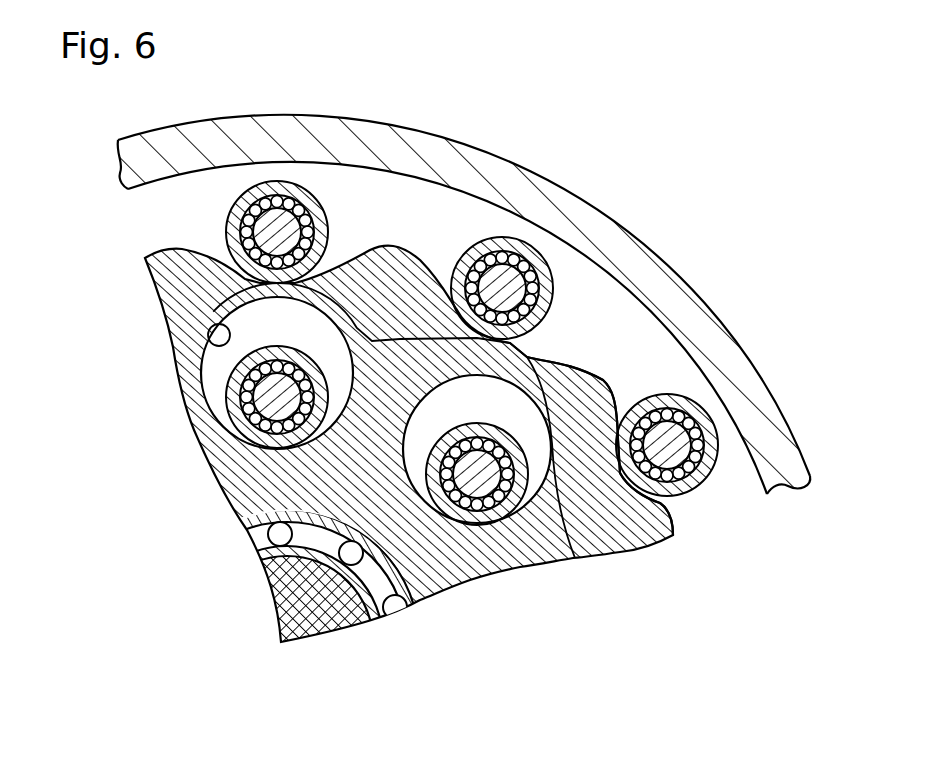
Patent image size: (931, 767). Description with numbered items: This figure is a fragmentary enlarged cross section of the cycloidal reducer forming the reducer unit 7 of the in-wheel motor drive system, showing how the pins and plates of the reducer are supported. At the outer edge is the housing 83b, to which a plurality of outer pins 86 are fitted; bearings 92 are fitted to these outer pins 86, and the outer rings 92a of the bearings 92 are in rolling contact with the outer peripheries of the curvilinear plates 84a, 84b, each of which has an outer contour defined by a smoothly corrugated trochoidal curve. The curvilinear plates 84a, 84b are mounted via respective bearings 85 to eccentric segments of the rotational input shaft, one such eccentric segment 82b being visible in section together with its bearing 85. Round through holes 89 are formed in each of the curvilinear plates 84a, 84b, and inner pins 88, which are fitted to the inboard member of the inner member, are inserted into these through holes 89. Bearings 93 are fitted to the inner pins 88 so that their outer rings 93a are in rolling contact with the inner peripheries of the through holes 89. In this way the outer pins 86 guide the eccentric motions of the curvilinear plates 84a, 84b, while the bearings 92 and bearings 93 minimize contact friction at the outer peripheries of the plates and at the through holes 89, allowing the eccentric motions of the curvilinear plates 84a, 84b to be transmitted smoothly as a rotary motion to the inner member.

The reducer unit 7 is at (465, 276).
The housing 83b is at (273, 130).
The outer pins 86 is at (420, 190).
The bearings 92 is at (522, 262).
The outer rings 92a is at (533, 218).
The curvilinear plate 84a is at (584, 343).
The curvilinear plate 84b is at (607, 380).
The through holes 89 is at (213, 327).
The outer rings 93a is at (210, 400).
The bearings 93 is at (268, 410).
The inner pins 88 is at (262, 436).
The eccentric segment 82b is at (306, 628).
The bearings 85 is at (398, 612).